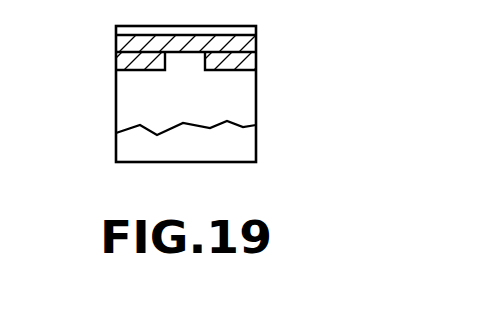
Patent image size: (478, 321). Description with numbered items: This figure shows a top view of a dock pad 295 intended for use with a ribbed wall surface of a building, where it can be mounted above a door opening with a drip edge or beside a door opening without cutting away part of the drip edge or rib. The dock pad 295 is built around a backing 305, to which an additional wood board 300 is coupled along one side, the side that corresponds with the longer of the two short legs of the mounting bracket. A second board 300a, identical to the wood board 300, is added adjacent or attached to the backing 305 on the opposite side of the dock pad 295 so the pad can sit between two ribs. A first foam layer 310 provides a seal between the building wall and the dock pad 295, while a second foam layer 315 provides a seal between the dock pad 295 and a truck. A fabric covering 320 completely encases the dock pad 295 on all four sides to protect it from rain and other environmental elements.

The dock pad 295 is at (298, 107).
The wood board 300 is at (258, 55).
The second board 300a is at (126, 63).
The backing 305 is at (126, 44).
The first foam layer 310 is at (257, 31).
The second foam layer 315 is at (135, 101).
The fabric covering 320 is at (243, 141).